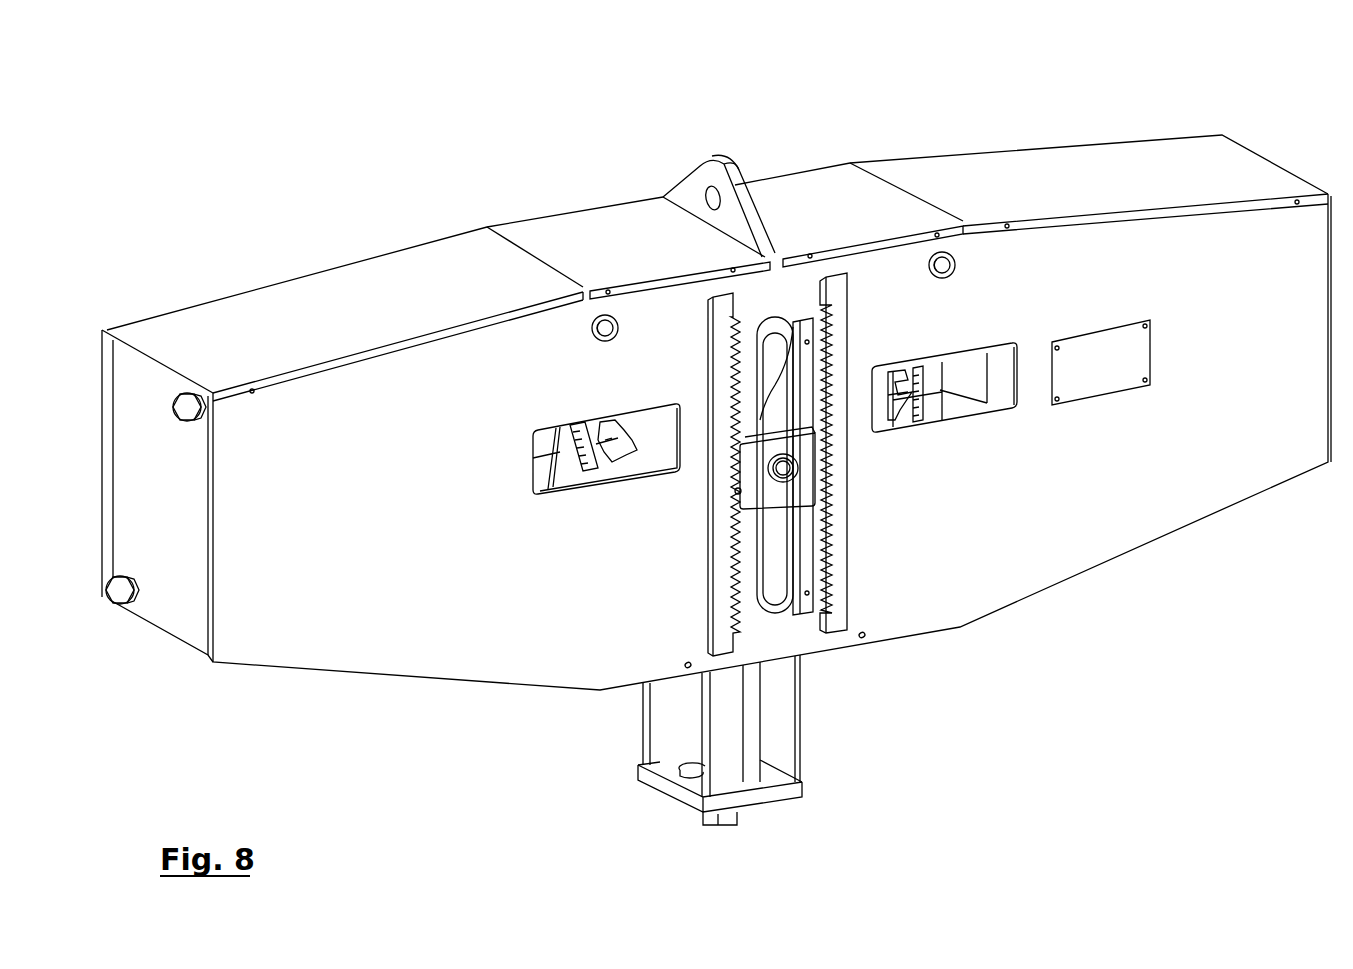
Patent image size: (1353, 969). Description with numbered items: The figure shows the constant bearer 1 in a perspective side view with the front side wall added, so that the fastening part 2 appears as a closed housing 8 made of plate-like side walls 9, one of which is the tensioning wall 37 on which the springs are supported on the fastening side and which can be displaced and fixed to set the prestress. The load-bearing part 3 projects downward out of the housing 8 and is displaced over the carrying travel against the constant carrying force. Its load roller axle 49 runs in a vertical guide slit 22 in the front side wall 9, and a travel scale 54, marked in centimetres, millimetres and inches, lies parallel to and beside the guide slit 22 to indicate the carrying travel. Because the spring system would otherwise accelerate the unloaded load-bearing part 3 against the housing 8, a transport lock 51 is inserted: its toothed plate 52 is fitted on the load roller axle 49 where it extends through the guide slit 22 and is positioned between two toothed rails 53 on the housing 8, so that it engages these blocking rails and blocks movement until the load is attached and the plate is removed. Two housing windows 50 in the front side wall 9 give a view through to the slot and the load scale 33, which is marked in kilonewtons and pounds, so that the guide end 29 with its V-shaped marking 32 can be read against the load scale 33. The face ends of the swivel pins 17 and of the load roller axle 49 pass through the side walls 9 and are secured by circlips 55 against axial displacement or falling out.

The constant bearer 1 is at (913, 118).
The fastening part 2 is at (980, 138).
The load-bearing part 3 is at (803, 795).
The housing 8 is at (1132, 140).
The side wall 9 is at (343, 309).
The tensioning wall 37 is at (126, 499).
The swivel pin 17 is at (592, 324).
The guide slit 22 is at (772, 553).
The guide end 29 is at (618, 448).
The marking 32 is at (637, 433).
The load scale 33 is at (588, 425).
The load roller axle 49 is at (788, 468).
The housing window 50 is at (672, 406).
The transport lock 51 is at (738, 492).
The toothed plate 52 is at (737, 477).
The toothed rail 53 is at (835, 563).
The travel scale 54 is at (805, 522).
The circlip 55 is at (598, 337).